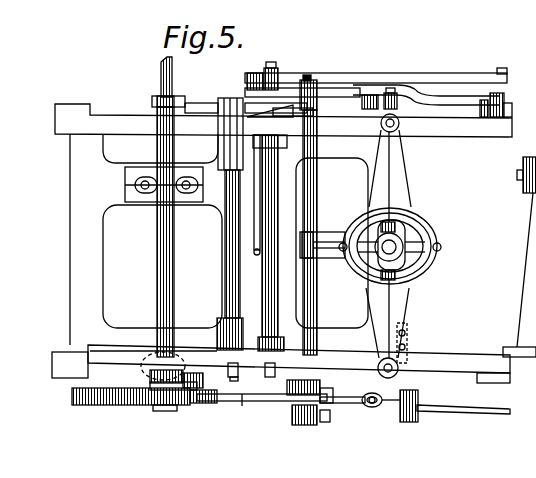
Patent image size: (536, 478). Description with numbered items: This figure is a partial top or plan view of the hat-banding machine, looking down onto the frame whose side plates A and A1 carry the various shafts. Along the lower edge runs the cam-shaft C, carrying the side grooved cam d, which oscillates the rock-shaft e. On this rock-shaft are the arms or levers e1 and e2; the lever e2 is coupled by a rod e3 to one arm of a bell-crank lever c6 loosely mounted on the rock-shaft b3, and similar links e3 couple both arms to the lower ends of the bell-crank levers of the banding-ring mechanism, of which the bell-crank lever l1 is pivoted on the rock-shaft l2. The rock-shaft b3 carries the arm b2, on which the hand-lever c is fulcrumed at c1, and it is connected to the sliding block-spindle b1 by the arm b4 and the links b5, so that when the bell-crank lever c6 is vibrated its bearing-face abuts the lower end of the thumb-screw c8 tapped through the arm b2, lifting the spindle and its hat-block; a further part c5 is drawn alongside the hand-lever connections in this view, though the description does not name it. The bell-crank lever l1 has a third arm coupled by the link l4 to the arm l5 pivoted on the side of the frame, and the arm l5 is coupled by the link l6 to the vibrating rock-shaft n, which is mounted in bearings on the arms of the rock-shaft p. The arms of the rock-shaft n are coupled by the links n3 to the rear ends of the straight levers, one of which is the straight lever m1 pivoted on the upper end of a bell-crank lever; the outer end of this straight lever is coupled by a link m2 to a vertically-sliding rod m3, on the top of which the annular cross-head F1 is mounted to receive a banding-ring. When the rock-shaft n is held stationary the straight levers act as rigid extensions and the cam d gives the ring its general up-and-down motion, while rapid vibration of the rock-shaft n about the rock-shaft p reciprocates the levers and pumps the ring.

The side plate A is at (281, 359).
The side plate A1 is at (283, 120).
The cam-shaft C is at (219, 239).
The rock-shaft e is at (160, 237).
The arm or lever e1 is at (152, 99).
The arm or lever e2 is at (150, 385).
The rod or link e3 is at (196, 114).
The cam d is at (128, 390).
The bell-crank lever l1 is at (246, 110).
The rock-shaft l2 is at (221, 275).
The link l4 is at (426, 93).
The arm l5 is at (505, 108).
The link l6 is at (470, 74).
The vibrating rock-shaft n is at (251, 195).
The link n3 is at (272, 80).
The rock-shaft p is at (266, 256).
The straight lever m1 is at (334, 91).
The link m2 is at (380, 97).
The vertically-sliding rod m3 is at (396, 374).
The annular cross-head F1 is at (388, 236).
The sliding spindle or rod b1 is at (392, 244).
The arm b2 is at (368, 398).
The rock-shaft b3 is at (311, 260).
The arm b4 is at (330, 240).
The link b5 is at (392, 226).
The hand-lever c is at (463, 400).
The fulcrum c1 is at (412, 420).
The rod c5 is at (262, 407).
The bell-crank lever c6 is at (320, 410).
The thumb-screw c8 is at (372, 408).